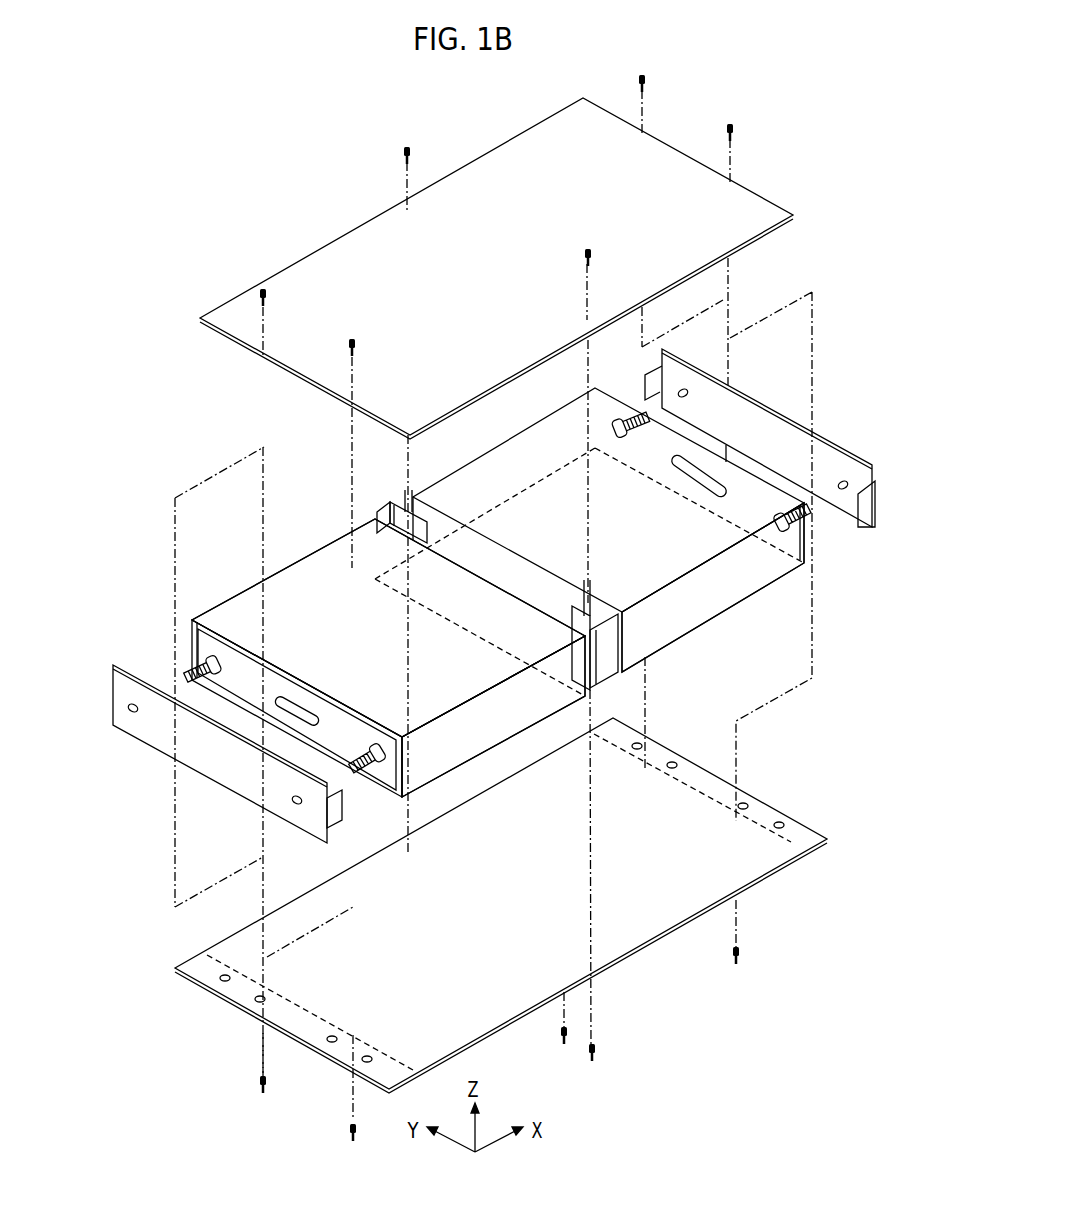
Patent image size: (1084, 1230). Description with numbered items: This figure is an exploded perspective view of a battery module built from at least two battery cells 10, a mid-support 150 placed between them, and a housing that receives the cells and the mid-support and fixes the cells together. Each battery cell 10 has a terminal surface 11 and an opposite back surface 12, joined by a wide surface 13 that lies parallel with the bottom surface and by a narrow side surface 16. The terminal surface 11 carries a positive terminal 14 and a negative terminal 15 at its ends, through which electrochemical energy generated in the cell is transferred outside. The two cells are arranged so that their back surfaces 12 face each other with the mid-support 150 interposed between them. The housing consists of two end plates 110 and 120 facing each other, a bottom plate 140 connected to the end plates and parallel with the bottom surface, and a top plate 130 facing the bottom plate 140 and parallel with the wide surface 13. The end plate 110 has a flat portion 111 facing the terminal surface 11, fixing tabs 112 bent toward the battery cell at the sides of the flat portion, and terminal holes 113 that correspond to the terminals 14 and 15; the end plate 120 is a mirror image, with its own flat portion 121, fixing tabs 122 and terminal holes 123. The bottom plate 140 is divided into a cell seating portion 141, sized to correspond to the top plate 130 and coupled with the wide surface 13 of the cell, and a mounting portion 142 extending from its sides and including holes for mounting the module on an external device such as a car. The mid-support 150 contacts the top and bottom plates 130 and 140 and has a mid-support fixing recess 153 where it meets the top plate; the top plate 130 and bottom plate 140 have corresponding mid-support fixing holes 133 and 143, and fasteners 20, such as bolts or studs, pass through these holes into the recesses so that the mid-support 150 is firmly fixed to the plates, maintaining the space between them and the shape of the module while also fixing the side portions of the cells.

The battery cell 10 is at (245, 580).
The terminal surface 11 is at (750, 500).
The back surface 12 is at (484, 551).
The wide surface 13 is at (460, 675).
The positive terminal 14 is at (200, 672).
The negative terminal 15 is at (350, 768).
The narrow side surface 16 is at (457, 732).
The fastener 20 is at (592, 1059).
The end plate 110 is at (186, 783).
The flat portion 111 is at (160, 738).
The fixing tab 112 is at (340, 810).
The terminal hole 113 is at (133, 712).
The end plate 120 is at (778, 390).
The flat portion 121 is at (740, 405).
The fixing tab 122 is at (648, 376).
The terminal hole 123 is at (683, 390).
The top plate 130 is at (343, 250).
The mid-support fixing hole 133 is at (587, 318).
The bottom plate 140 is at (862, 880).
The cell seating portion 141 is at (749, 871).
The mounting portion 142 is at (800, 842).
The mid-support fixing hole 143 is at (409, 853).
The mid-support 150 is at (380, 490).
The mid-support fixing recess 153 is at (590, 618).